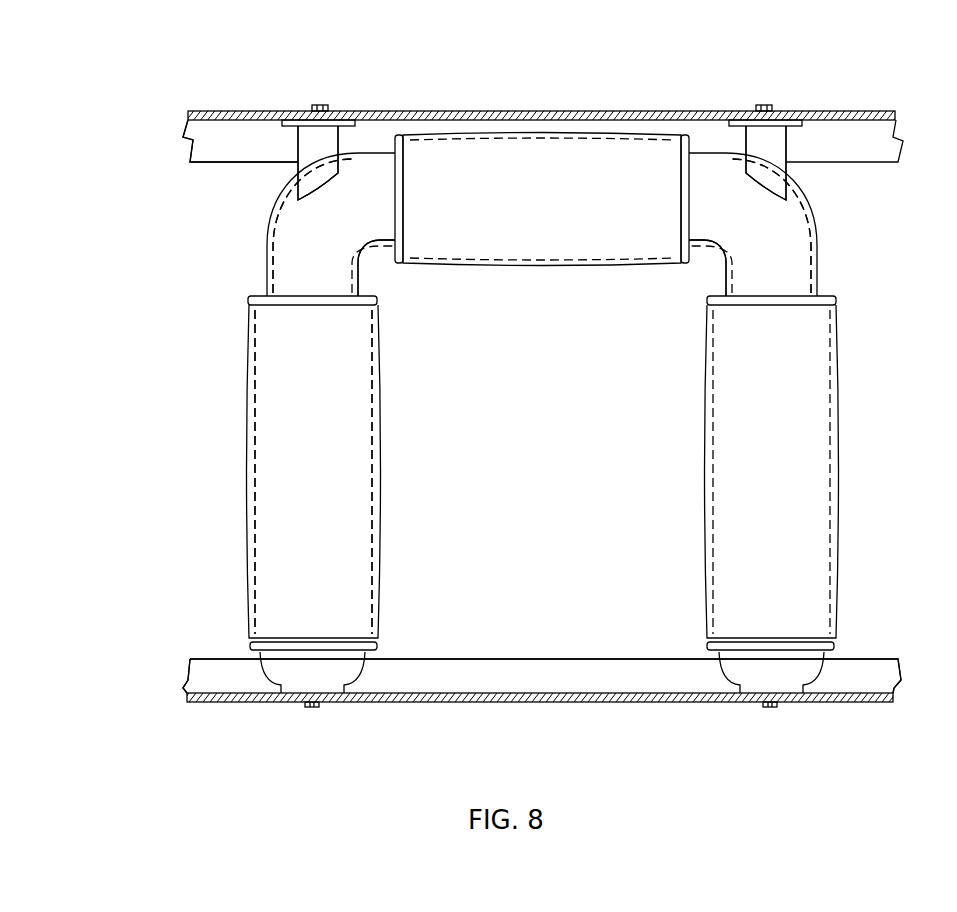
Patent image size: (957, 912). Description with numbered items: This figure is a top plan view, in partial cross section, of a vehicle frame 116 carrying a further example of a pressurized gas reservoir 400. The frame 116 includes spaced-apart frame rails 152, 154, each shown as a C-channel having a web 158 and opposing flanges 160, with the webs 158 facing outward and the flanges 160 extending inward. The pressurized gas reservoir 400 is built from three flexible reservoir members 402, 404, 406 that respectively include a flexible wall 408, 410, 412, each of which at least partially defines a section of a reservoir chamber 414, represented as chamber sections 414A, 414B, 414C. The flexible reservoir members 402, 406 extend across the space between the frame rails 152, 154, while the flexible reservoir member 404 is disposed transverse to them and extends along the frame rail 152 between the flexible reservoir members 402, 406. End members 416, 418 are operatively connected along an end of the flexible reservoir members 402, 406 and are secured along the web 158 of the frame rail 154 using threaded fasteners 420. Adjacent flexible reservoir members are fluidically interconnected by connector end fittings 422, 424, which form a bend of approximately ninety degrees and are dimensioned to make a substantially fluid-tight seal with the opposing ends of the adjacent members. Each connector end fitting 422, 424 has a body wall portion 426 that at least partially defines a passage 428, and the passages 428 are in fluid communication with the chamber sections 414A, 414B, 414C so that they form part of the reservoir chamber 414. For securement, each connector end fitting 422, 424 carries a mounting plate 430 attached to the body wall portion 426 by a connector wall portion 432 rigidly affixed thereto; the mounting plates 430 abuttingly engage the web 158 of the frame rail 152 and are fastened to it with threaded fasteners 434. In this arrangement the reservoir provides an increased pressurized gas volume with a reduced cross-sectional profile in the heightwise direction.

The frame 116 is at (168, 119).
The frame rail 152 is at (188, 140).
The frame rail 154 is at (190, 678).
The web 158 is at (852, 112).
The flange 160 is at (877, 150).
The pressurized gas reservoir 400 is at (170, 428).
The flexible reservoir member 402 is at (243, 473).
The flexible reservoir member 404 is at (542, 192).
The flexible reservoir member 406 is at (825, 473).
The flexible wall 408 is at (248, 498).
The flexible wall 410 is at (612, 265).
The flexible wall 412 is at (838, 560).
The reservoir chamber 414 is at (353, 380).
The chamber section 414A is at (282, 541).
The chamber section 414B is at (558, 146).
The chamber section 414C is at (790, 378).
The end member 416 is at (263, 672).
The end member 418 is at (807, 667).
The threaded fastener 420 is at (312, 708).
The connector end fitting 422 is at (257, 232).
The connector end fitting 424 is at (828, 253).
The body wall portion 426 is at (270, 262).
The passage 428 is at (302, 227).
The mounting plate 430 is at (287, 130).
The connector wall portion 432 is at (332, 140).
The threaded fastener 434 is at (320, 105).